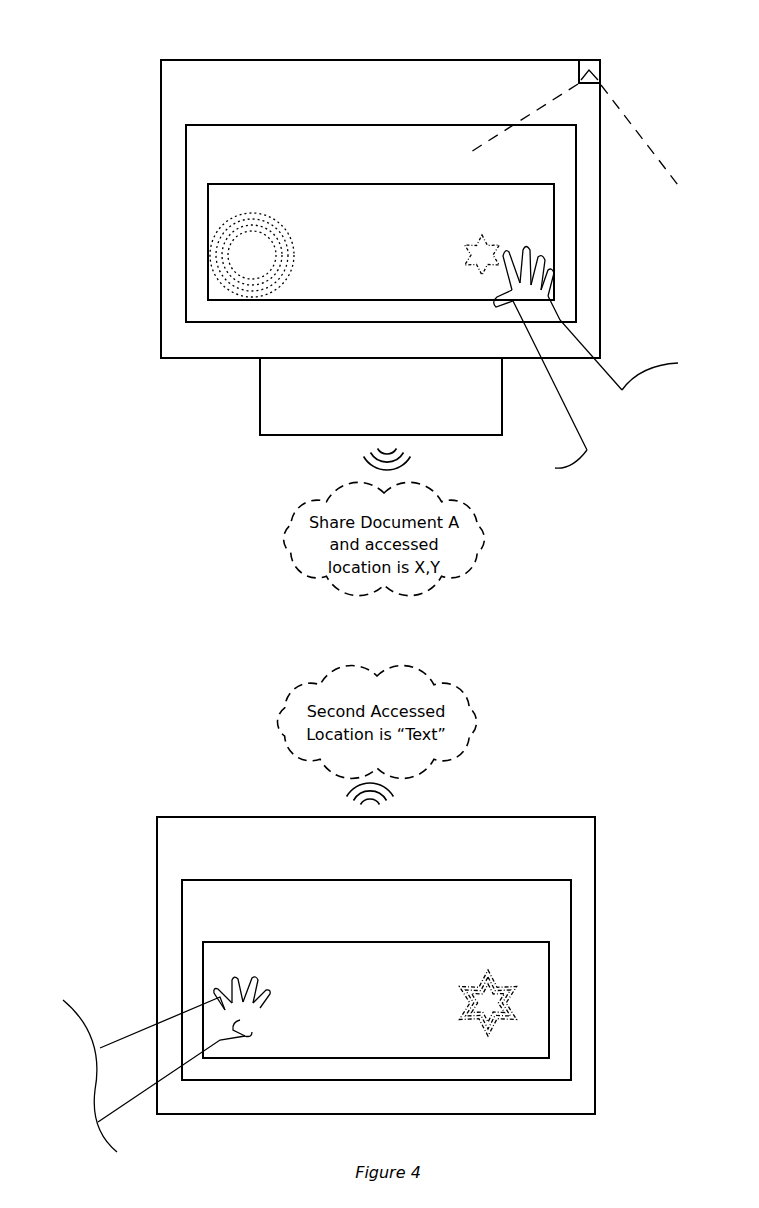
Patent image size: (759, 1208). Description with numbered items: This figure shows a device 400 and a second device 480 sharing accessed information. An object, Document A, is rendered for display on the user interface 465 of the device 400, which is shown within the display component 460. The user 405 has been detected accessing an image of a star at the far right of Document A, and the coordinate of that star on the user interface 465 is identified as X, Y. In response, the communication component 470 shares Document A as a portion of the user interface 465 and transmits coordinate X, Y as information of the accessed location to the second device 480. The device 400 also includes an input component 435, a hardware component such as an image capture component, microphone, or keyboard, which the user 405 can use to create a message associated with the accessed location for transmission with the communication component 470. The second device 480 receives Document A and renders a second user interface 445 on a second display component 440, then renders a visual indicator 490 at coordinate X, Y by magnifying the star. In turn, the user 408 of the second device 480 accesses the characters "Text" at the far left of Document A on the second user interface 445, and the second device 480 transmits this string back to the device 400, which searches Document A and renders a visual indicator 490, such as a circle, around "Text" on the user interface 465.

The device 400 is at (167, 78).
The input component 435 is at (597, 55).
The display component 460 is at (381, 198).
The user interface 465 is at (381, 217).
The visual indicator 490 is at (630, 955).
The communication component 470 is at (381, 414).
The user 405 is at (586, 358).
The second device 480 is at (586, 809).
The second display component 440 is at (376, 955).
The second user interface 445 is at (376, 974).
The user 408 is at (152, 1064).